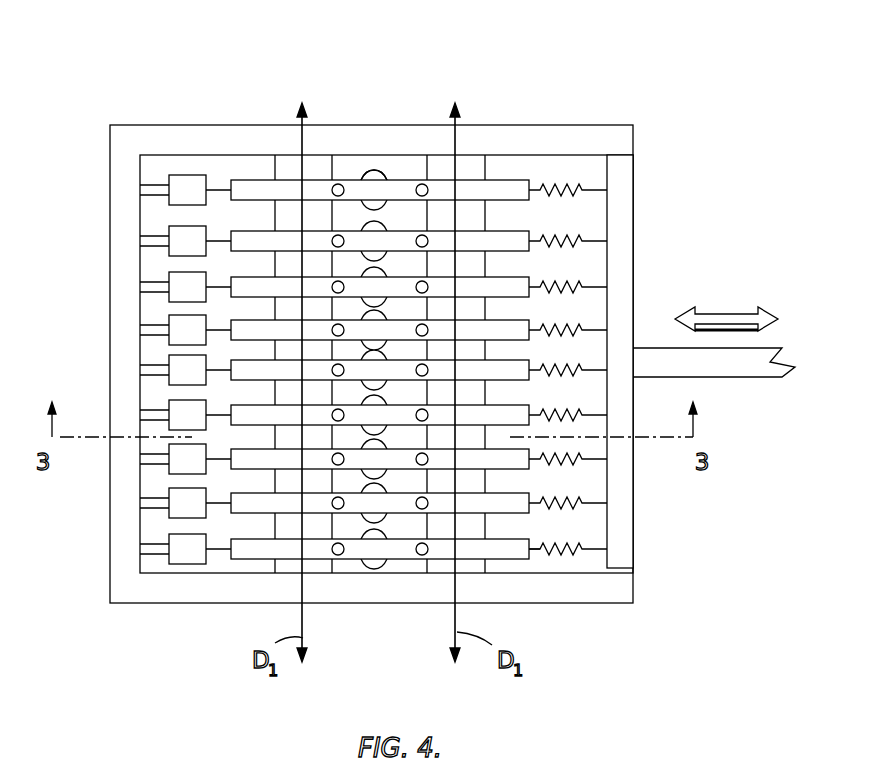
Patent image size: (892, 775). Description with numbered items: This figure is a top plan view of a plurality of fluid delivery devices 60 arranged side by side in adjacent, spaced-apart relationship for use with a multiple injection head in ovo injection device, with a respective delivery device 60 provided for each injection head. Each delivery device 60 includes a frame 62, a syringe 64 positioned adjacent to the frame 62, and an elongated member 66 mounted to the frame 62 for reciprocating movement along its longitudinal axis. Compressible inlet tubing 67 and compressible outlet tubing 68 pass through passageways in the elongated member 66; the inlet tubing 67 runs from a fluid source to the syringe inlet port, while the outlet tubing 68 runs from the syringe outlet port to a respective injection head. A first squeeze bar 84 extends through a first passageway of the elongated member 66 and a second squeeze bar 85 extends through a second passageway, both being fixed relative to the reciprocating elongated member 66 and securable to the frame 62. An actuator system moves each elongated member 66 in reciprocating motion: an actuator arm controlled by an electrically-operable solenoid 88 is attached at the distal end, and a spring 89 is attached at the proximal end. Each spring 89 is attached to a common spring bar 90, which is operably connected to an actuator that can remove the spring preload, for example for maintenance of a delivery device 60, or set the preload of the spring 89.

The fluid delivery device 60 is at (349, 176).
The frame 62 is at (603, 128).
The syringe 64 is at (374, 169).
The elongated member 66 is at (240, 373).
The compressible inlet tubing 67 is at (338, 235).
The compressible outlet tubing 68 is at (422, 235).
The first squeeze bar 84 is at (285, 567).
The second squeeze bar 85 is at (522, 547).
The electrically-operable solenoid 88 is at (182, 242).
The spring 89 is at (585, 290).
The common spring bar 90 is at (628, 178).